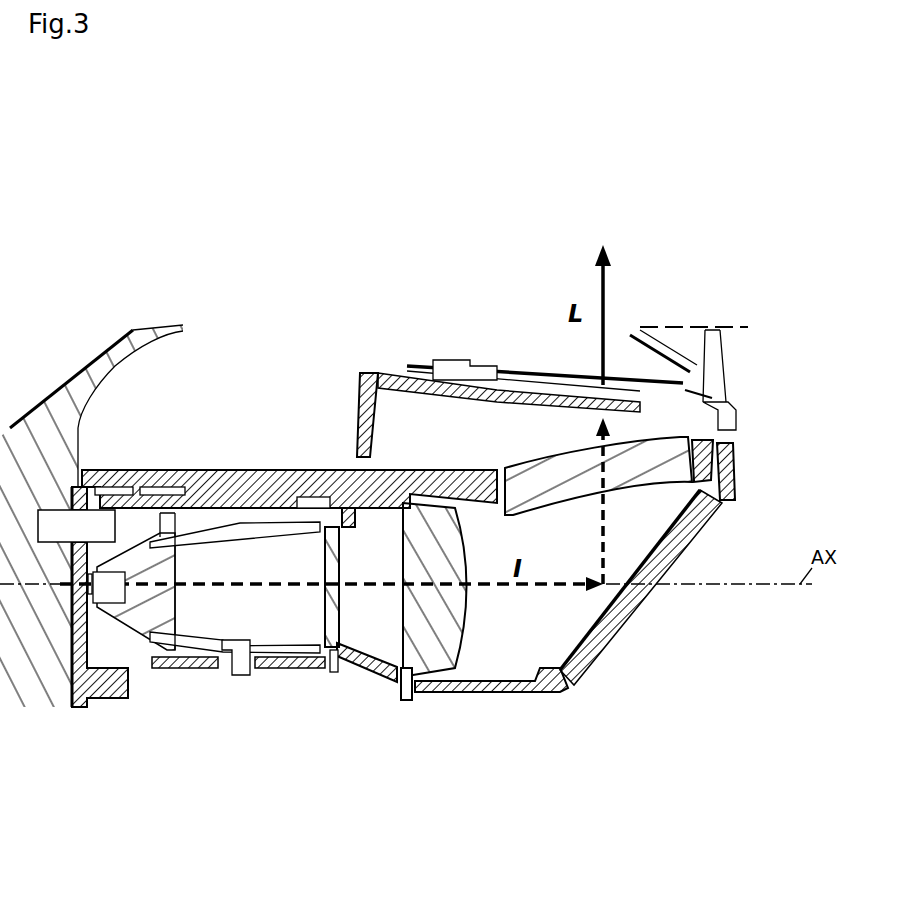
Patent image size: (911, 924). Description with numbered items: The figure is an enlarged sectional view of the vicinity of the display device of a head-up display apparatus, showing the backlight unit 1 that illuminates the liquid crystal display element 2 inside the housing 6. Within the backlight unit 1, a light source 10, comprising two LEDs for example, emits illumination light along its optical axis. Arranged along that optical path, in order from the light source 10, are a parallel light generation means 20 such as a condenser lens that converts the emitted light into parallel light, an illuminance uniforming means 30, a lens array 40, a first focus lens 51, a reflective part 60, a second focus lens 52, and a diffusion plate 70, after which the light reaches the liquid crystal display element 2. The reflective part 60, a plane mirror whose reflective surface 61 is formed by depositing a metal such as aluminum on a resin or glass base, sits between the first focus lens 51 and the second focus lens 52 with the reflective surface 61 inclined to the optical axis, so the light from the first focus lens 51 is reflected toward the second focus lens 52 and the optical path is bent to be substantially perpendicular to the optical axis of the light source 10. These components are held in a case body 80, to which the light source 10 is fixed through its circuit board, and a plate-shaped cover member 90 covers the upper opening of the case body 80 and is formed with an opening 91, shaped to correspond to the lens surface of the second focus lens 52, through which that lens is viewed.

The backlight unit 1 is at (416, 539).
The liquid crystal display element 2 is at (527, 372).
The housing 6 is at (60, 397).
The light source 10 is at (98, 605).
The parallel light generation means 20 is at (148, 620).
The illuminance uniforming means 30 is at (210, 650).
The lens array 40 is at (335, 655).
The first focus lens 51 is at (407, 612).
The second focus lens 52 is at (633, 442).
The reflective part 60 is at (574, 682).
The reflective surface 61 is at (522, 682).
The diffusion plate 70 is at (560, 407).
The case body 80 is at (643, 607).
The cover member 90 is at (332, 470).
The opening 91 is at (683, 441).